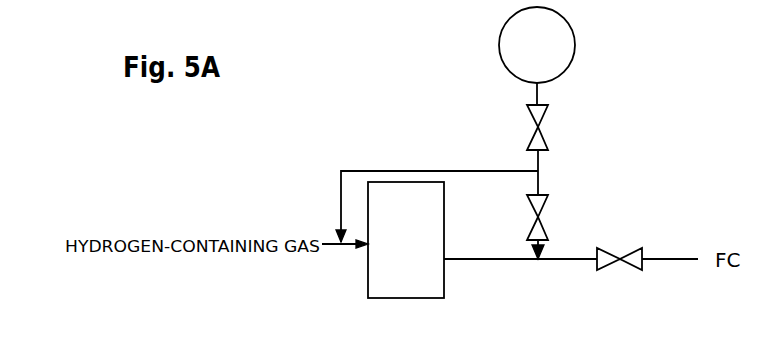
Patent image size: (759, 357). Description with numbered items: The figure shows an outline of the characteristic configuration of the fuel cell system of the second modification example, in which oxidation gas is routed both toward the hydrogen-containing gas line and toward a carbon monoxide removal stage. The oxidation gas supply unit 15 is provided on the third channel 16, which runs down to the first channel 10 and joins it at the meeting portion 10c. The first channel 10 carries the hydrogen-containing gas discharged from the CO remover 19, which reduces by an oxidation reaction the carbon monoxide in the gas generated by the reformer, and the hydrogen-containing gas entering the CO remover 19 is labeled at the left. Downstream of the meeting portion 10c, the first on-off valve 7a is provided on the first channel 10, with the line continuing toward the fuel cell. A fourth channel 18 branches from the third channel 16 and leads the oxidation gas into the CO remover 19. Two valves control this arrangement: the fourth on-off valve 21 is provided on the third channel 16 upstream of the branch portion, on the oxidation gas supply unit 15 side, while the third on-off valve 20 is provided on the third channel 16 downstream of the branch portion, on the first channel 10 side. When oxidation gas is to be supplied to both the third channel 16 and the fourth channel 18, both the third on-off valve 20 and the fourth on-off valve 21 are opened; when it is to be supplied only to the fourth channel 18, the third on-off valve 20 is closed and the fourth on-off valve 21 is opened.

The oxidation gas supply unit 15 is at (537, 45).
The fourth on-off valve 21 is at (546, 115).
The third channel 16 is at (538, 178).
The third on-off valve 20 is at (546, 203).
The meeting portion 10c is at (537, 262).
The fourth channel 18 is at (383, 171).
The CO remover 19 is at (406, 240).
The first channel 10 is at (475, 260).
The first on-off valve 7a is at (604, 247).